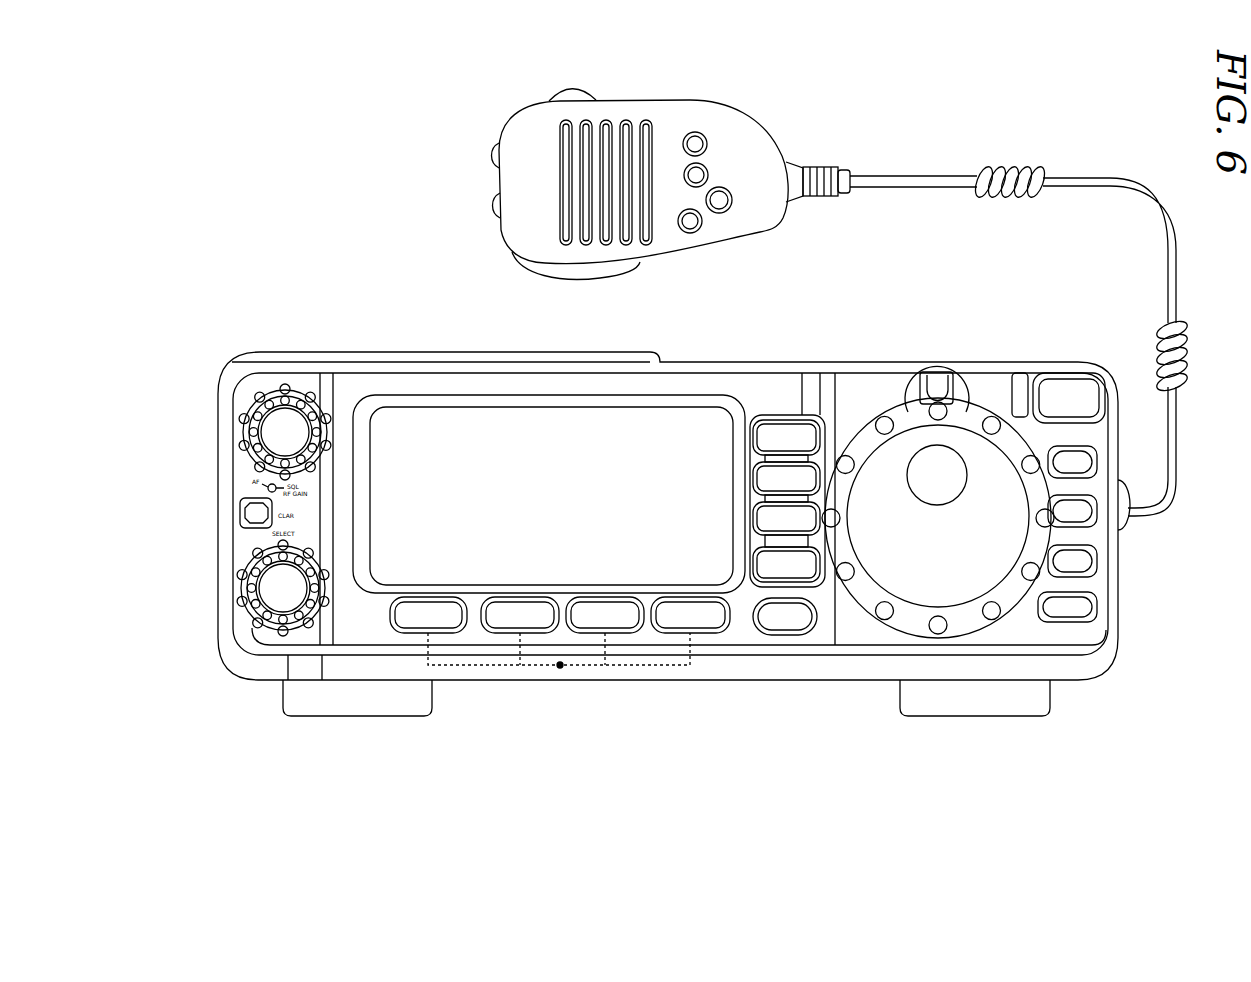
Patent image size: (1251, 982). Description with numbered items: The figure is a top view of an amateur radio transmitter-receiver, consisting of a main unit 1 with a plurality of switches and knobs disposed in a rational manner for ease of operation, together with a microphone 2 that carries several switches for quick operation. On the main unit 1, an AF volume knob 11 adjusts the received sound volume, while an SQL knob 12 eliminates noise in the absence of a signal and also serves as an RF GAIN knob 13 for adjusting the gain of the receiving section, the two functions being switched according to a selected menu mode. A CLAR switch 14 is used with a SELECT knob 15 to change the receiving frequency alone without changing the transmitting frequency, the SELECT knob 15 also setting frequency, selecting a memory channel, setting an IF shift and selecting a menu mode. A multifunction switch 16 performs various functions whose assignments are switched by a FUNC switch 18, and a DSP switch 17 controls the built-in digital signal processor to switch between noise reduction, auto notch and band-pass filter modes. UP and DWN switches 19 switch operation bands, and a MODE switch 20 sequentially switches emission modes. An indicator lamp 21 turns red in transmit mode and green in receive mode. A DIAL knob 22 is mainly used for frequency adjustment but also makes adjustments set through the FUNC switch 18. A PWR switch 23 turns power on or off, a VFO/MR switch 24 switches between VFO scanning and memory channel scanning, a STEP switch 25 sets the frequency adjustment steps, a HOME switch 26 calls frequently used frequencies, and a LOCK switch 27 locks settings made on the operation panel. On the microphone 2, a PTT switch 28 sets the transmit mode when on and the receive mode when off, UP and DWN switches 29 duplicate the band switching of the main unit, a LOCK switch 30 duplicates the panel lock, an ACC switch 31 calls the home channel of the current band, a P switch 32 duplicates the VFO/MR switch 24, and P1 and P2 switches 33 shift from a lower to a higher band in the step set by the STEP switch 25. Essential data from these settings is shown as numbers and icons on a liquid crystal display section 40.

The main unit 1 is at (446, 348).
The microphone 2 is at (777, 133).
The AF volume knob 11 is at (288, 423).
The SQL (squelch) knob 12 is at (278, 387).
The RF GAIN knob 13 is at (280, 386).
The CLAR (clarifier) switch 14 is at (257, 513).
The SELECT knob 15 is at (281, 590).
The multifunction switch 16 is at (560, 665).
The DSP (digital signal processor) switch 17 is at (786, 637).
The FUNC (function) switch 18 is at (812, 580).
The UP and DWN (down) switches 19 is at (762, 525).
The MODE switch 20 is at (783, 425).
The indicator lamp 21 is at (937, 380).
The DIAL (dial) knob 22 is at (985, 468).
The PWR (power) switch 23 is at (1063, 388).
The VFO/MR switch 24 is at (1073, 460).
The STEP switch 25 is at (1073, 510).
The HOME switch 26 is at (1073, 560).
The LOCK switch 27 is at (1070, 608).
The PTT switch 28 is at (520, 272).
The UP and DWN (down) switches 29 is at (494, 207).
The LOCK switch 30 is at (573, 92).
The ACC switch 31 is at (688, 226).
The P switch 32 is at (722, 199).
The P1 and P2 switches 33 is at (686, 147).
The liquid crystal display section 40 is at (525, 497).